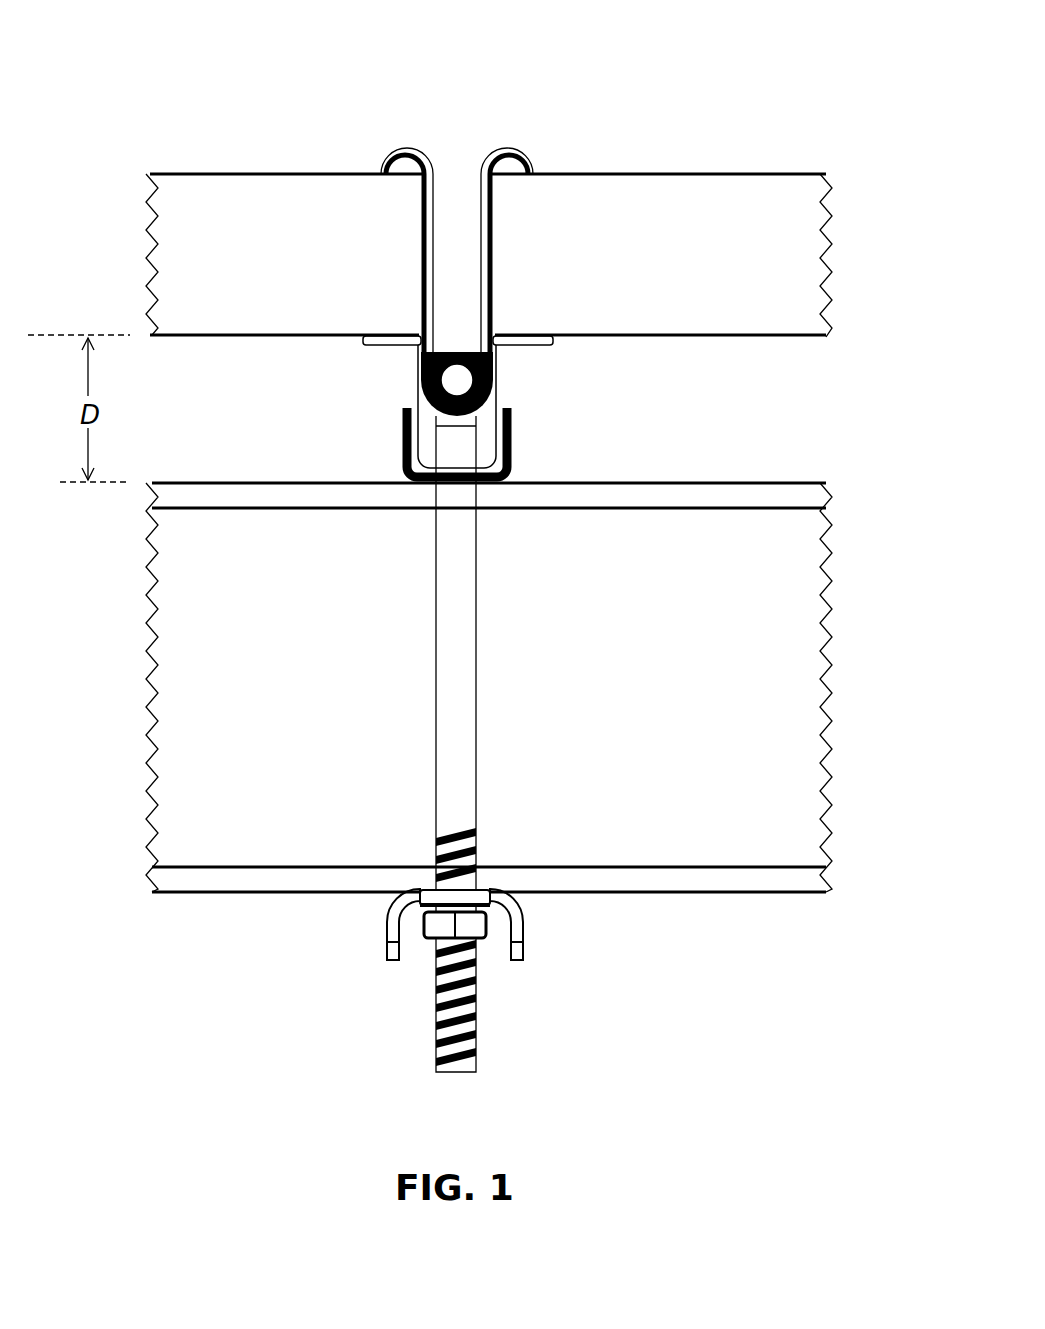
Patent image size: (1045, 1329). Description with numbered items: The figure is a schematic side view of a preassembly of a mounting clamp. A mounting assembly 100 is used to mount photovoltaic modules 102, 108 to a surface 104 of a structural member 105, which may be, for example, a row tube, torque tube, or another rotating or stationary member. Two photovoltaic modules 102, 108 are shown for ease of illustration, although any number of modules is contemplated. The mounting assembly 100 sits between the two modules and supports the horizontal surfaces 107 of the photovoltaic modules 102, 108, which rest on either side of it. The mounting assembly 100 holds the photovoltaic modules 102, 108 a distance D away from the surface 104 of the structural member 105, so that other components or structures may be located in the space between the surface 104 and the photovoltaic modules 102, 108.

The mounting assembly 100 is at (573, 397).
The photovoltaic module 102 is at (645, 240).
The surface 104 is at (630, 812).
The structural member 105 is at (813, 627).
The horizontal surfaces 107 is at (318, 174).
The photovoltaic module 108 is at (295, 240).